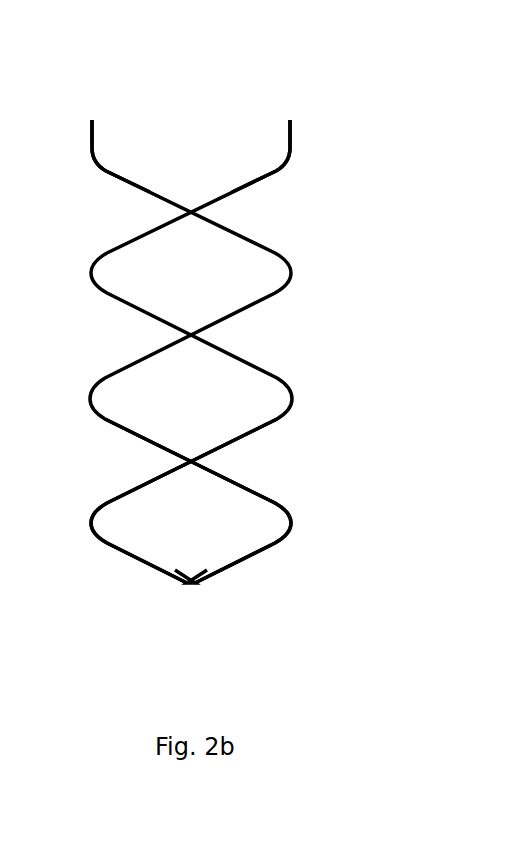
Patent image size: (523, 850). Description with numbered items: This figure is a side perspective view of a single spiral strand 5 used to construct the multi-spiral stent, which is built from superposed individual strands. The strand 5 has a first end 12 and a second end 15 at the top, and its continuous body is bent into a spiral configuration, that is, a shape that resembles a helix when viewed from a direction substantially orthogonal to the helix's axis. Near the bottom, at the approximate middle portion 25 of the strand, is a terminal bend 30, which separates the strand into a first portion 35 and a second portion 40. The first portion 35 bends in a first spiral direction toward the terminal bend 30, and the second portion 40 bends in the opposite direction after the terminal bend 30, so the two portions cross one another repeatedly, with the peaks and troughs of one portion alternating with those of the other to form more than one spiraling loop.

The strand 5 is at (348, 122).
The first end 12 is at (283, 122).
The second end 15 is at (100, 122).
The approximate middle portion 25 is at (327, 533).
The terminal bend 30 is at (215, 587).
The first portion 35 is at (270, 180).
The second portion 40 is at (107, 172).